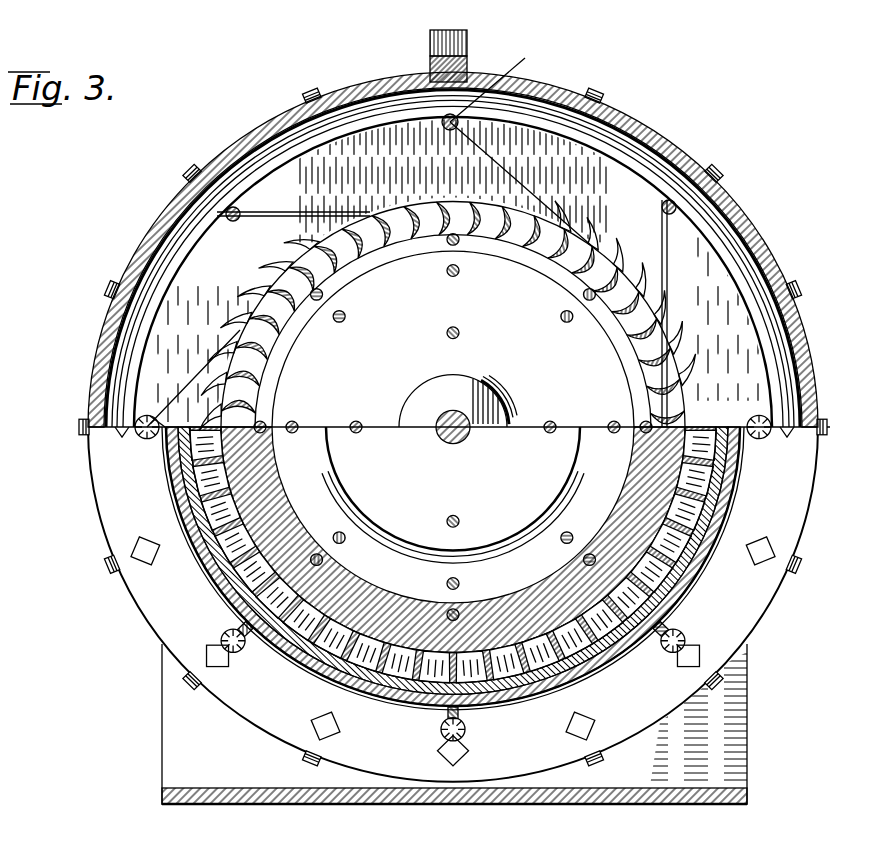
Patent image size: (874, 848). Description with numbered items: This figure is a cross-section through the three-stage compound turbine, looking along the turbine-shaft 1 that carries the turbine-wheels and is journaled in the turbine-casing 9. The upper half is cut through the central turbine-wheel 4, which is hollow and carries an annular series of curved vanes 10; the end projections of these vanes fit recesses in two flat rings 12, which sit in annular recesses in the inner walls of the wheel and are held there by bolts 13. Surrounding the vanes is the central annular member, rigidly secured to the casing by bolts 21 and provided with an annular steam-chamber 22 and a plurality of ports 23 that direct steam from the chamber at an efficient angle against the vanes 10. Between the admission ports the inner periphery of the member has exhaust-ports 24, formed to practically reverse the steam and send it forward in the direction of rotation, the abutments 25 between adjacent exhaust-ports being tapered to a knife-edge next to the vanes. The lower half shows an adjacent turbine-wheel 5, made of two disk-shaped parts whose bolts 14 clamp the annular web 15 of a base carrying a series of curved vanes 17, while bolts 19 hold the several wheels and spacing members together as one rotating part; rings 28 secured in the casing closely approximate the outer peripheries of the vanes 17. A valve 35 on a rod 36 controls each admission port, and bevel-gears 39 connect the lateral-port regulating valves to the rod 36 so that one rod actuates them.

The turbine-shaft 1 is at (446, 421).
The central turbine-wheel 4 is at (468, 398).
The turbine-wheel 5 is at (390, 460).
The turbine-casing 9 is at (552, 96).
The curved vanes 10 is at (640, 325).
The flat rings 12 is at (375, 258).
The bolts 13 is at (580, 296).
The bolts 14 is at (322, 563).
The annular web 15 is at (381, 604).
The curved vanes 17 is at (738, 512).
The bolts 19 is at (452, 333).
The bolts 21 is at (800, 293).
The annular steam-chamber 22 is at (700, 215).
The ports 23 is at (510, 187).
The exhaust-ports 24 is at (447, 195).
The abutments 25 is at (283, 287).
The rings 28 is at (491, 694).
The valve 35 is at (495, 83).
The rod 36 is at (444, 733).
The bevel-gears 39 is at (232, 640).